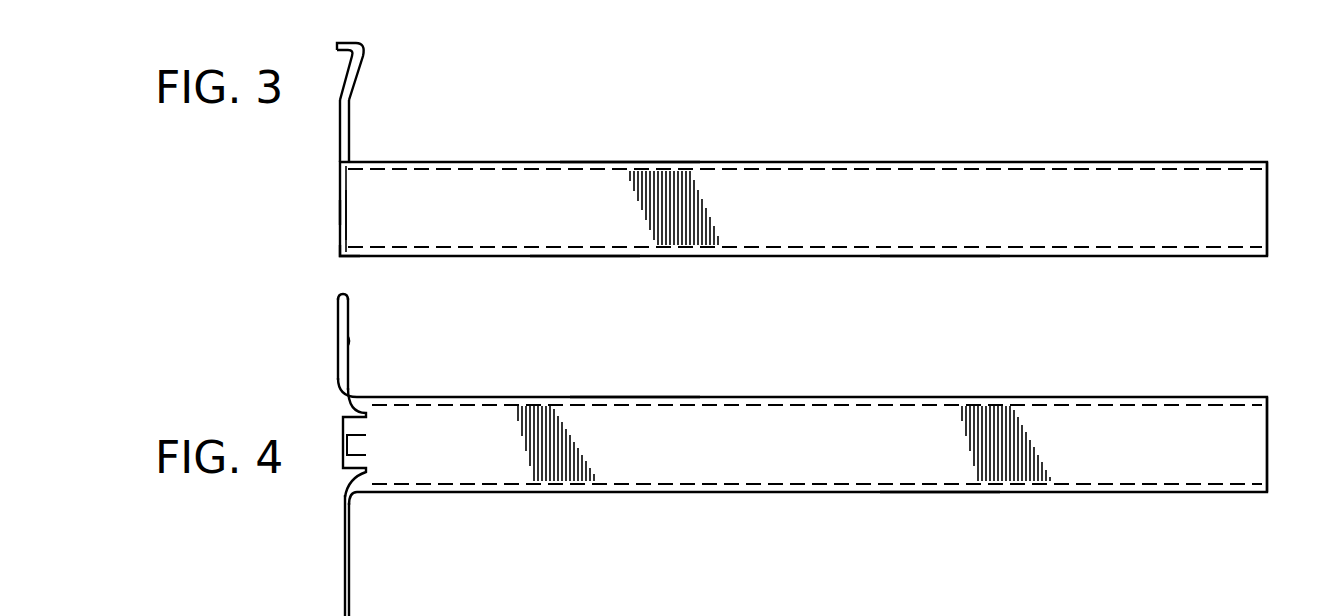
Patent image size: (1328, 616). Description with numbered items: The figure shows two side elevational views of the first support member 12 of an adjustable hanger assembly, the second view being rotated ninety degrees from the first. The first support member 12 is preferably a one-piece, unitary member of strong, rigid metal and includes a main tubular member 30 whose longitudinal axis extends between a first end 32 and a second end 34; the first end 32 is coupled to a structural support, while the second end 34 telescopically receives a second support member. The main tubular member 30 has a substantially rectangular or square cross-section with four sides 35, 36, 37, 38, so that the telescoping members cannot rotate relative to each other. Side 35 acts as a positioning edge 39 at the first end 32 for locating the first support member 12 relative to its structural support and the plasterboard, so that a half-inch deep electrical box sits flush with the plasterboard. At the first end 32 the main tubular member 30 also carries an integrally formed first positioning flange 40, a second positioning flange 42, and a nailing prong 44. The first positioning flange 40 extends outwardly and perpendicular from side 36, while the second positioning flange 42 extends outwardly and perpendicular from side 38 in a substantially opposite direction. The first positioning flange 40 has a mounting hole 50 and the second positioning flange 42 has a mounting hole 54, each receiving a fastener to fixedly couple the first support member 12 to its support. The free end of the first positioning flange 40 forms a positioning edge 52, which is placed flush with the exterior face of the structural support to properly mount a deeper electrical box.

In FIG. 3, the first support member 12 is at (911, 137).
In FIG. 4, the first support member 12 is at (910, 393).
In FIG. 3, the main tubular member 30 is at (930, 257).
In FIG. 4, the main tubular member 30 is at (915, 494).
In FIG. 3, the first end 32 is at (358, 161).
In FIG. 4, the first end 32 is at (356, 493).
In FIG. 3, the second end 34 is at (1268, 172).
In FIG. 4, the second end 34 is at (1268, 406).
In FIG. 3, the side 35 is at (573, 257).
In FIG. 4, the side 36 is at (626, 396).
In FIG. 3, the side 37 is at (614, 161).
In FIG. 4, the side 37 is at (838, 453).
In FIG. 3, the side 38 is at (845, 218).
In FIG. 4, the side 38 is at (595, 494).
In FIG. 3, the positioning edge 39 is at (350, 257).
In FIG. 4, the first positioning flange 40 is at (338, 313).
In FIG. 3, the second positioning flange 42 is at (348, 231).
In FIG. 4, the second positioning flange 42 is at (345, 605).
In FIG. 3, the nailing prong 44 is at (364, 67).
In FIG. 4, the nailing prong 44 is at (367, 445).
In FIG. 4, the mounting hole 50 is at (340, 340).
In FIG. 4, the positioning edge 52 is at (338, 292).
In FIG. 3, the mounting hole 54 is at (340, 212).
In FIG. 4, the mounting hole 54 is at (340, 568).